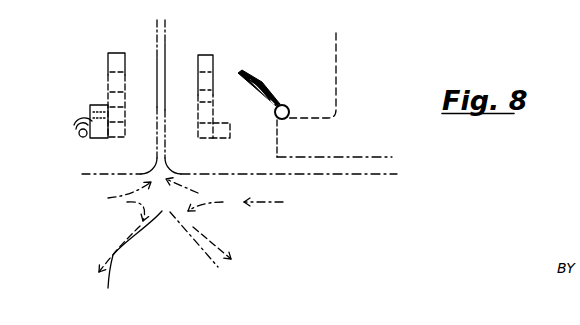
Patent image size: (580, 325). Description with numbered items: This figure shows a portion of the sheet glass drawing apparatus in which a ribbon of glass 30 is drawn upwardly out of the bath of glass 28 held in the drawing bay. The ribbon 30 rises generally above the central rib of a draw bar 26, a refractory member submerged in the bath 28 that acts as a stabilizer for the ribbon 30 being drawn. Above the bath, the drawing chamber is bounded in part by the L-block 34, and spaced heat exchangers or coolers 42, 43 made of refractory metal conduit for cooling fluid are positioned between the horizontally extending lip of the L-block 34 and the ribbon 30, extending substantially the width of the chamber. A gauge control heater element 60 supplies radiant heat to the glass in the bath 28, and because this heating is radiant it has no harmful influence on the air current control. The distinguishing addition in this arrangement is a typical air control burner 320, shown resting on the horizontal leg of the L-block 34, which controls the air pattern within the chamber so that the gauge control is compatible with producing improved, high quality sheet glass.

The draw bar 26 is at (177, 262).
The bath of glass 28 is at (228, 174).
The ribbon of glass 30 is at (165, 43).
The L-block 34 is at (336, 52).
The heat exchanger or cooler 42 is at (108, 58).
The heat exchanger or cooler 43 is at (213, 65).
The gauge control heater element 60 is at (79, 135).
The signal light / beacon 320 is at (285, 105).